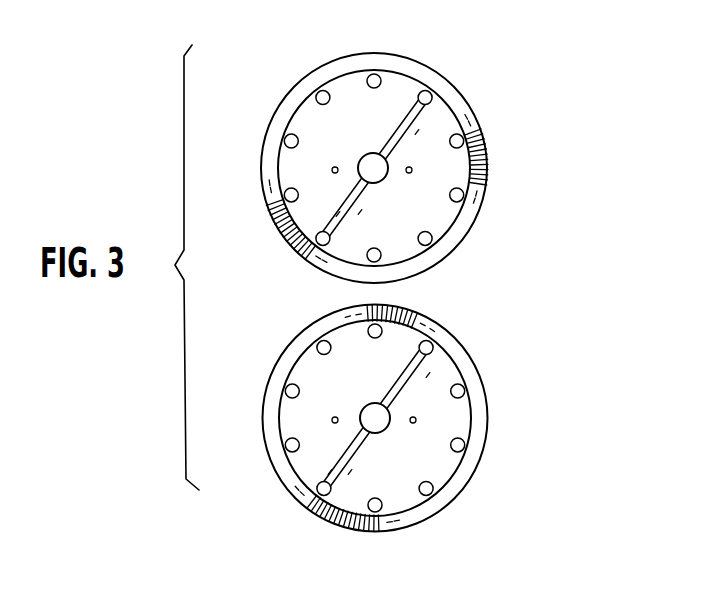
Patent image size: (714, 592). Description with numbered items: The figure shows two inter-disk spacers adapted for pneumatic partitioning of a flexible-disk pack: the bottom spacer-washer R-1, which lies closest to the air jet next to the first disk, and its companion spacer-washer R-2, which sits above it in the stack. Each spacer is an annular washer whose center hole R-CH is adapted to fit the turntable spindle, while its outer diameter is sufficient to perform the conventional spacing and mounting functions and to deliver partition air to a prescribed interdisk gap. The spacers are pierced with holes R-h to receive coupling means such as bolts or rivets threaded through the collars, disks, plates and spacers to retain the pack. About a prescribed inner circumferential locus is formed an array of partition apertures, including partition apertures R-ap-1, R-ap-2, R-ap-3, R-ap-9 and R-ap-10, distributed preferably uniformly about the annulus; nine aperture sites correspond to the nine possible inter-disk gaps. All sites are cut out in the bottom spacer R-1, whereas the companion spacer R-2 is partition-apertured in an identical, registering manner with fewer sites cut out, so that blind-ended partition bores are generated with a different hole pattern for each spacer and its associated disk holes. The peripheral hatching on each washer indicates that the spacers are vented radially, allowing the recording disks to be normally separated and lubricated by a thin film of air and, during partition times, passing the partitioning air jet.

The bottom spacer-washer R-1 is at (480, 370).
The companion spacer-washer R-2 is at (478, 120).
The center hole R-CH is at (372, 153).
The holes R-h is at (335, 166).
The partition aperture R-ap-1 is at (482, 185).
The partition aperture R-ap-2 is at (483, 151).
The partition aperture R-ap-3 is at (412, 108).
The partition aperture R-ap-9 is at (383, 508).
The partition aperture R-ap-10 is at (431, 237).